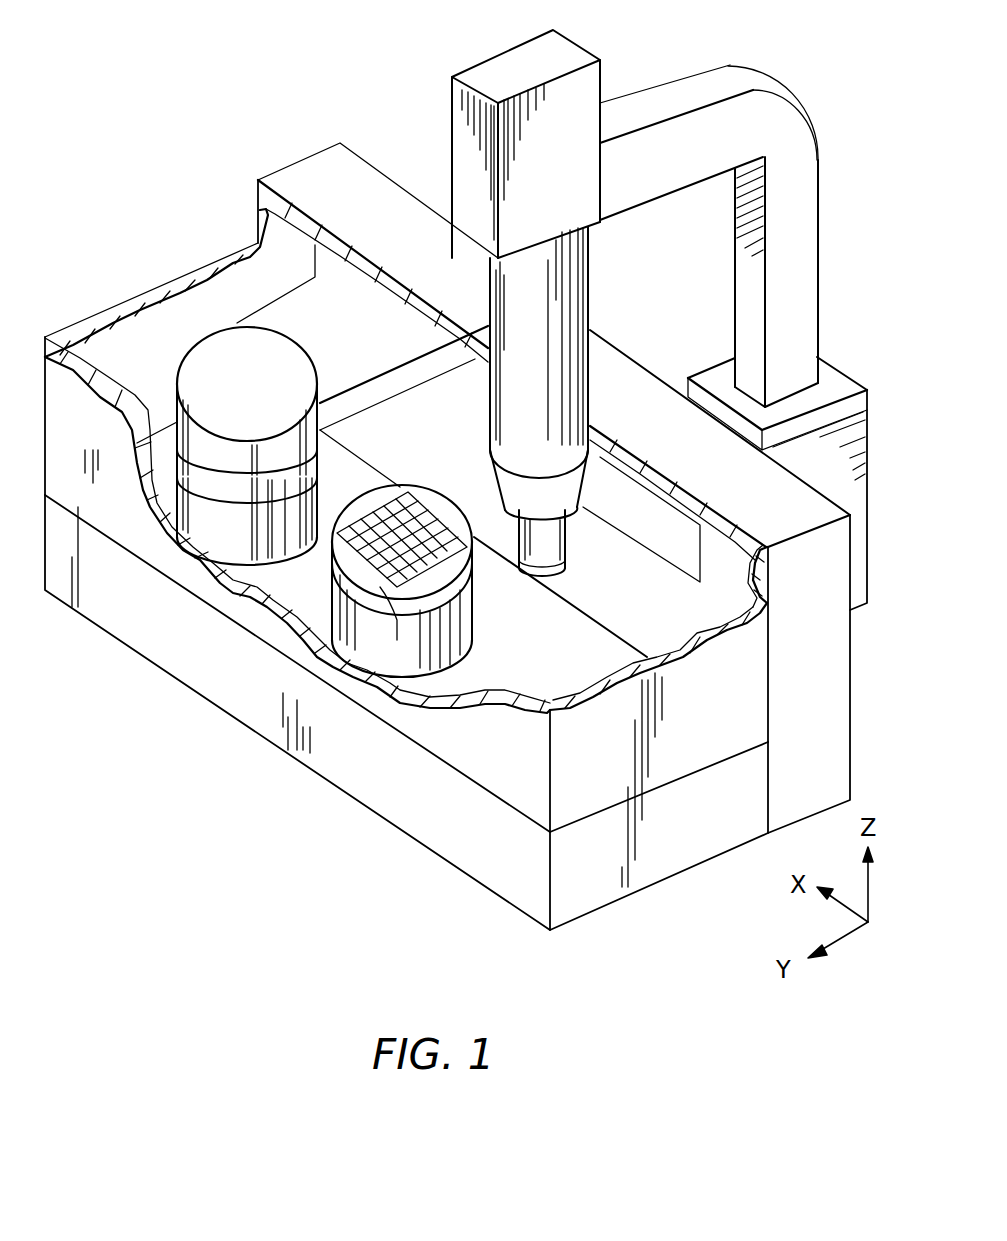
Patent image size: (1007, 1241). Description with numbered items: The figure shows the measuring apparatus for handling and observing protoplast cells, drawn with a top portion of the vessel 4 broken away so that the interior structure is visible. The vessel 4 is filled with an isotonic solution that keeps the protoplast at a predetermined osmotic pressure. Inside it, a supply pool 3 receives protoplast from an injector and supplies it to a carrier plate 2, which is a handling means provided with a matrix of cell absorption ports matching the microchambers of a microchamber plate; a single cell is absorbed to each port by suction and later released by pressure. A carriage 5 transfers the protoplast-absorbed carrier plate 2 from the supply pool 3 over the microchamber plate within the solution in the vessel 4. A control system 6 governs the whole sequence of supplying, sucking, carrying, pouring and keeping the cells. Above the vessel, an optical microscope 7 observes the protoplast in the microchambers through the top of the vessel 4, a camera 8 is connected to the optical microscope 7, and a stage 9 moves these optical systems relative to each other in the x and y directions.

The carrier plate 2 is at (210, 488).
The supply pool 3 is at (253, 547).
The vessel 4 is at (485, 775).
The carriage 5 is at (350, 317).
The control system 6 is at (838, 677).
The optical microscope 7 is at (546, 313).
The camera 8 is at (492, 75).
The stage 9 is at (848, 377).